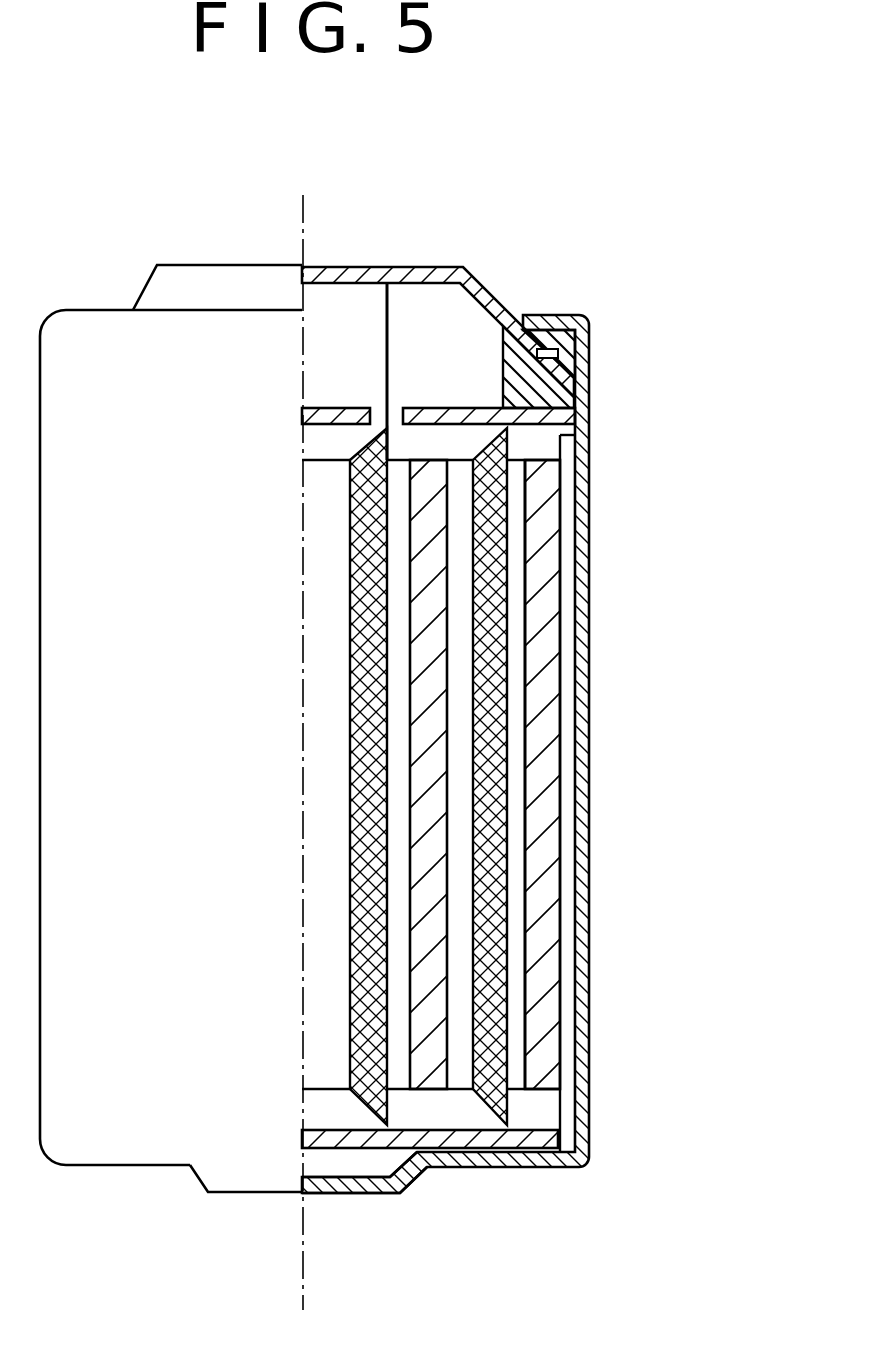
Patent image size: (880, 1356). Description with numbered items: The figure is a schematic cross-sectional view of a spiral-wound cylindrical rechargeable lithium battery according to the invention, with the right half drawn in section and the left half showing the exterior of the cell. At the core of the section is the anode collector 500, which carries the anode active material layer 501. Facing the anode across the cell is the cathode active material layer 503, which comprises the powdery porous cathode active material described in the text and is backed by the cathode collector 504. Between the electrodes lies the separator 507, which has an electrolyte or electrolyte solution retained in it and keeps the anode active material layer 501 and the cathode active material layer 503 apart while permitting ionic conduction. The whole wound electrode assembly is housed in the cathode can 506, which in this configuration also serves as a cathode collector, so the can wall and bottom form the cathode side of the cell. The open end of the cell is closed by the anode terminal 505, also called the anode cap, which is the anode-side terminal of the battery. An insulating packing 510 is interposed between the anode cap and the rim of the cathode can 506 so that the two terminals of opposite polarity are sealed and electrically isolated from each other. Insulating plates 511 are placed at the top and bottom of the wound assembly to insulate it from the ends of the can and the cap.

The anode collector 500 is at (388, 340).
The anode active material layer 501 is at (500, 660).
The cathode active material layer 503 is at (548, 1013).
The cathode collector 504 is at (563, 865).
The anode terminal 505 is at (413, 266).
The cathode can 506 is at (403, 1190).
The separator 507 is at (515, 770).
The insulating packing 510 is at (565, 385).
The insulating plate 511 is at (590, 438).